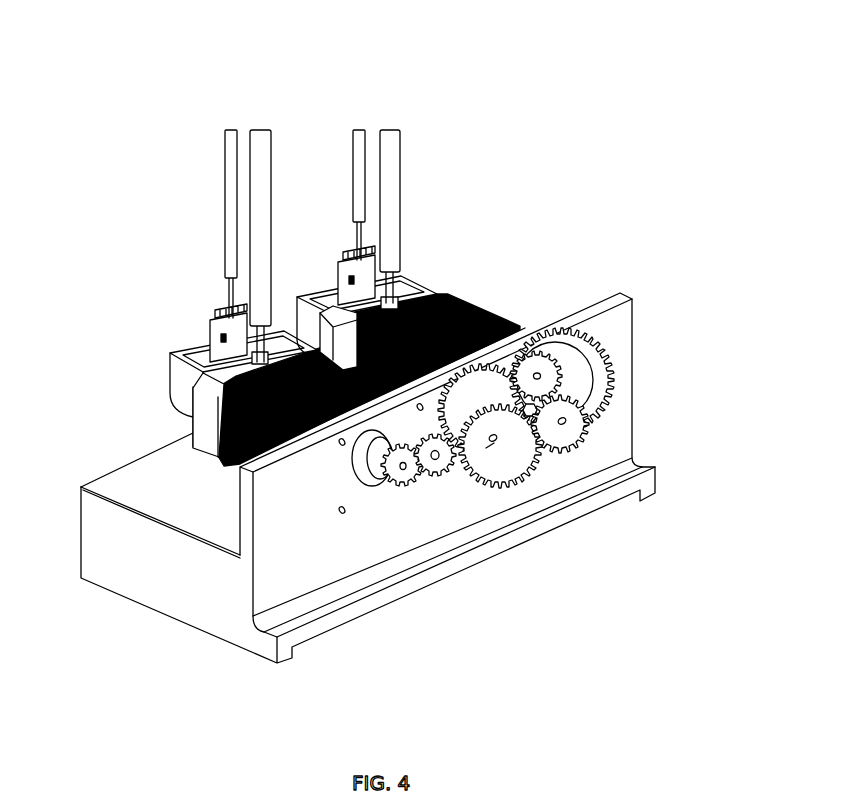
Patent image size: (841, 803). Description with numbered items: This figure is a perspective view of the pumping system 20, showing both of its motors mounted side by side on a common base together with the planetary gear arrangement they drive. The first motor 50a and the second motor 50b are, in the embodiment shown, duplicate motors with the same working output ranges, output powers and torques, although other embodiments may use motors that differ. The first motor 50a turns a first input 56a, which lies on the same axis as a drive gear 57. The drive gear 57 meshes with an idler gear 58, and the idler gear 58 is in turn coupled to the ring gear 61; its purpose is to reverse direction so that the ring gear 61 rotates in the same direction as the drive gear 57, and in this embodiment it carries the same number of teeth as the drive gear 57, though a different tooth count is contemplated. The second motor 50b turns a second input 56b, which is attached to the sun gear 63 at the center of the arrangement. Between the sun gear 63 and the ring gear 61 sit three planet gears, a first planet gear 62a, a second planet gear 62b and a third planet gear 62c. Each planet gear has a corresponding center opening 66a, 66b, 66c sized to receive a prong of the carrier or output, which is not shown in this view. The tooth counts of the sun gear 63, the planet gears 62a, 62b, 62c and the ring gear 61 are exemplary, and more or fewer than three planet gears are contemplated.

The pumping system 20 is at (652, 112).
The first motor 50a is at (203, 378).
The second motor 50b is at (448, 293).
The first input 56a is at (357, 463).
The second input 56b is at (495, 397).
The drive gear 57 is at (396, 478).
The idler gear 58 is at (434, 462).
The ring gear 61 is at (597, 347).
The first planet gear 62a is at (552, 360).
The second planet gear 62b is at (562, 424).
The third planet gear 62c is at (497, 442).
The sun gear 63 is at (553, 400).
The center opening 66a is at (541, 374).
The center opening 66b is at (563, 422).
The center opening 66c is at (486, 448).